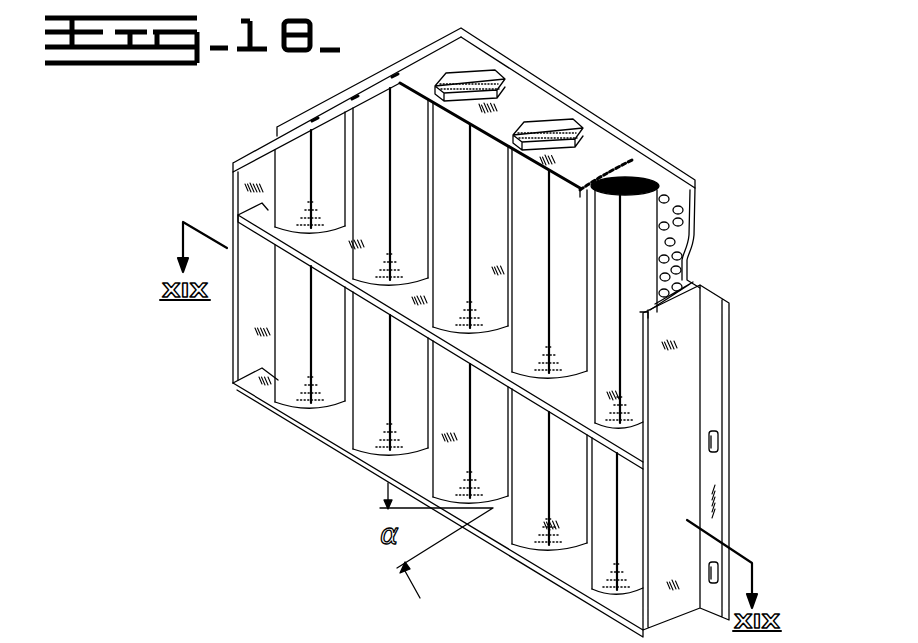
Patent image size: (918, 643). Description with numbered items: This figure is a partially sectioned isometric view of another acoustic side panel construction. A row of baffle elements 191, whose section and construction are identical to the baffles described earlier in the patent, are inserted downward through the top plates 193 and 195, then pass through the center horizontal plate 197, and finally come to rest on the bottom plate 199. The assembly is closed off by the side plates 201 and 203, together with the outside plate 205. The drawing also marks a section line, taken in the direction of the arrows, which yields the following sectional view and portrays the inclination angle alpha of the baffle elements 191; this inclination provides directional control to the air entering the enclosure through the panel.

The baffle element 191 is at (646, 203).
The top plate 193 is at (532, 102).
The top plate 195 is at (257, 152).
The center horizontal plate 197 is at (250, 212).
The bottom plate 199 is at (313, 416).
The side plate 201 is at (262, 338).
The side plate 203 is at (690, 325).
The outside plate 205 is at (688, 196).